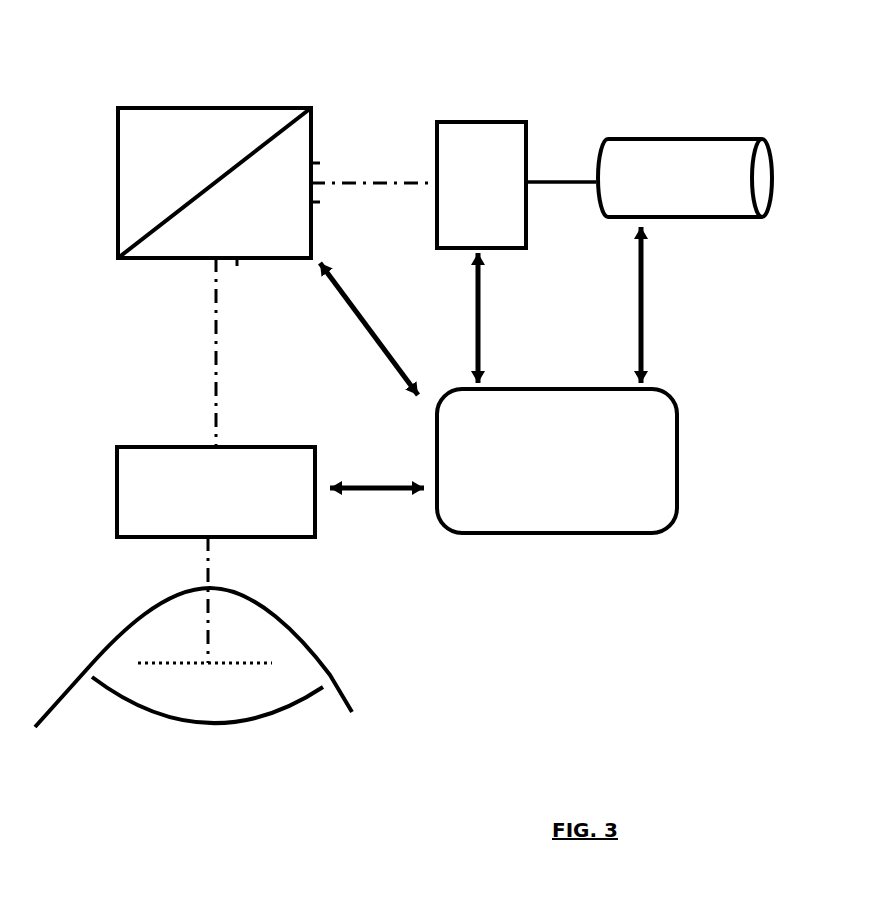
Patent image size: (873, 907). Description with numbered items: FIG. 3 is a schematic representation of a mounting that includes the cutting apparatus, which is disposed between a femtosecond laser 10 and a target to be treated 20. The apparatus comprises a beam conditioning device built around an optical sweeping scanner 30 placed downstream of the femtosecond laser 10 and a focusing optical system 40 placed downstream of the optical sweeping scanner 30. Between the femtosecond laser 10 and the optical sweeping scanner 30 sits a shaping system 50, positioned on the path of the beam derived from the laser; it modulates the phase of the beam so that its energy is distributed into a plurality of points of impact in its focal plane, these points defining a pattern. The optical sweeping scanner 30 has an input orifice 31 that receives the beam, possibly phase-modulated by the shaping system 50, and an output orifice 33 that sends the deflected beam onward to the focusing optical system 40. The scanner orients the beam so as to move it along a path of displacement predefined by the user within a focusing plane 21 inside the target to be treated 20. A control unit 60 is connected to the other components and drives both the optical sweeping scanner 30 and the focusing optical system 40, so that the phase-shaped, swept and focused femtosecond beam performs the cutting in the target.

The femtosecond laser 10 is at (681, 163).
The target to be treated 20 is at (332, 695).
The focusing plane 21 is at (272, 663).
The optical sweeping scanner 30 is at (183, 175).
The input orifice 31 is at (311, 163).
The output orifice 33 is at (200, 260).
The focusing optical system 40 is at (145, 485).
The shaping system 50 is at (480, 165).
The control unit 60 is at (564, 490).